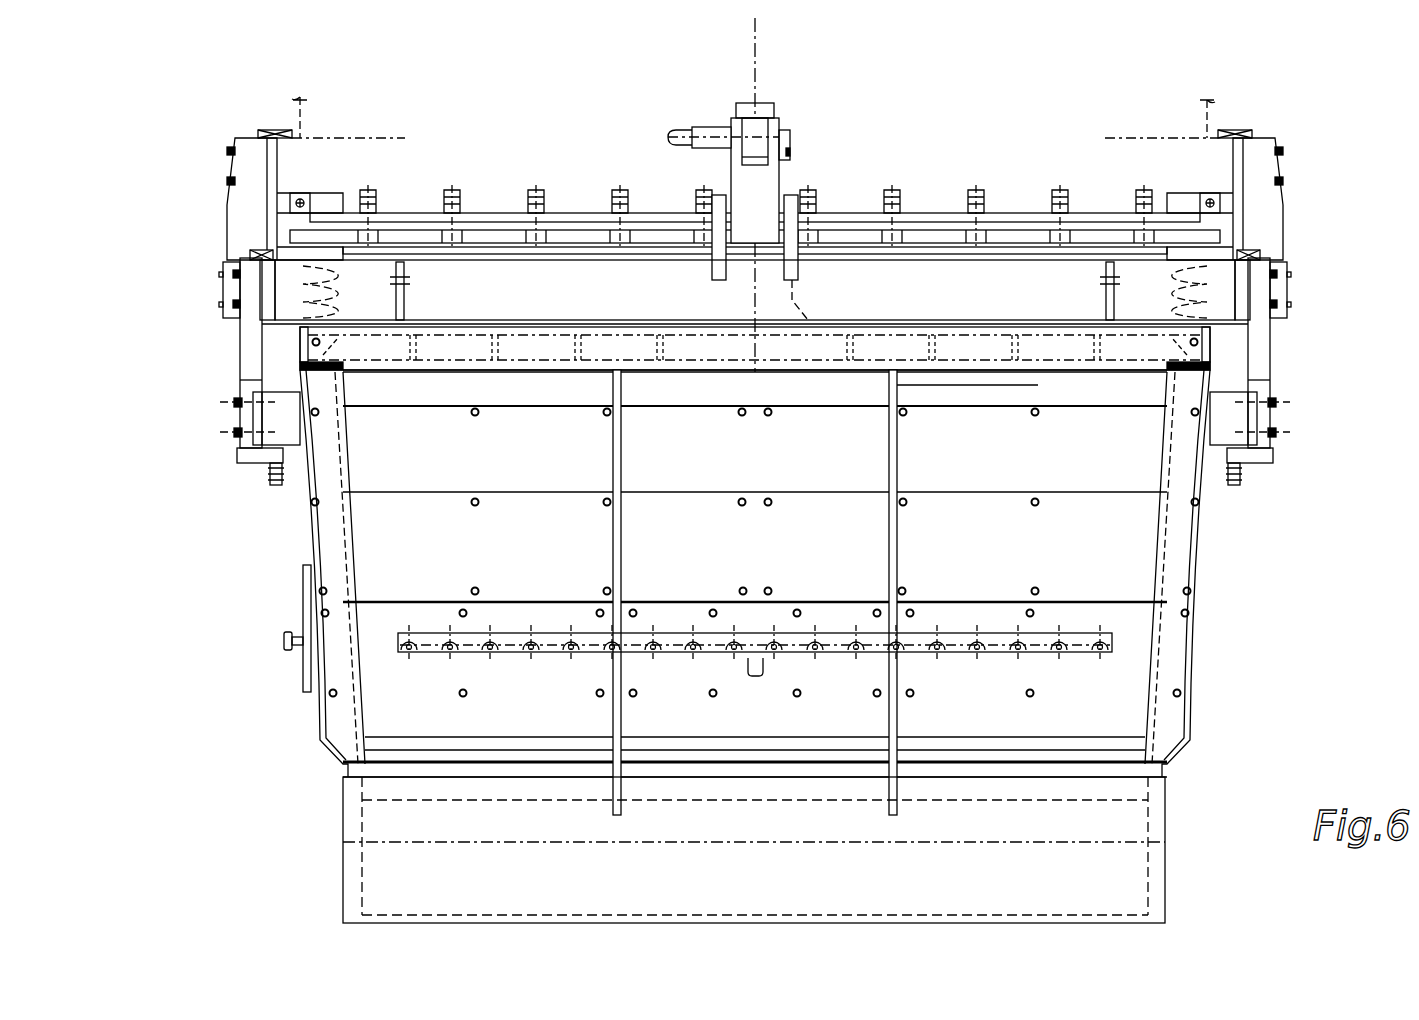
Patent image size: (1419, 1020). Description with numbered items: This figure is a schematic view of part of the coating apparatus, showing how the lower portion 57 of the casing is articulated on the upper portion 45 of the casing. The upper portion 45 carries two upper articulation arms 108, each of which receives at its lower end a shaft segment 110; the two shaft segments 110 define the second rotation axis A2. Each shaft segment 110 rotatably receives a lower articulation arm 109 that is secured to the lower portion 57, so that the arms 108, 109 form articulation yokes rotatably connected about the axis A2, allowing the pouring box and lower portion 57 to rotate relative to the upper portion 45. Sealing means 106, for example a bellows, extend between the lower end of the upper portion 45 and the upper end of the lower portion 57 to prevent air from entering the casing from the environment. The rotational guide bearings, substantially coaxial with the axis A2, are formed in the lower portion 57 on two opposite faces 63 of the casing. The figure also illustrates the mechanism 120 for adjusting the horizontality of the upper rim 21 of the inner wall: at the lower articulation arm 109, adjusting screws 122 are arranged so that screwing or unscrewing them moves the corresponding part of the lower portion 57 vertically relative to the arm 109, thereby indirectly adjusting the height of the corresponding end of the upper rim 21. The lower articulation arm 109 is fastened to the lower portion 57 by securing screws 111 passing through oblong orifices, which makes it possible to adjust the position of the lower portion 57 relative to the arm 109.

The upper portion of the casing 45 is at (318, 123).
The upper articulation arm 108 is at (243, 228).
The sealing means 106 is at (225, 288).
The second rotation axis A2 is at (230, 303).
The shaft segment 110 is at (1300, 292).
The lower articulation arm 109 is at (254, 356).
The securing screw 111 is at (235, 432).
The mechanism for adjusting horizontality 120 is at (223, 456).
The adjusting screw 122 is at (268, 472).
The opposite face of the casing 63 is at (413, 560).
The lower portion of the casing 57 is at (263, 612).
The upper rim of the inner wall 21 is at (403, 845).